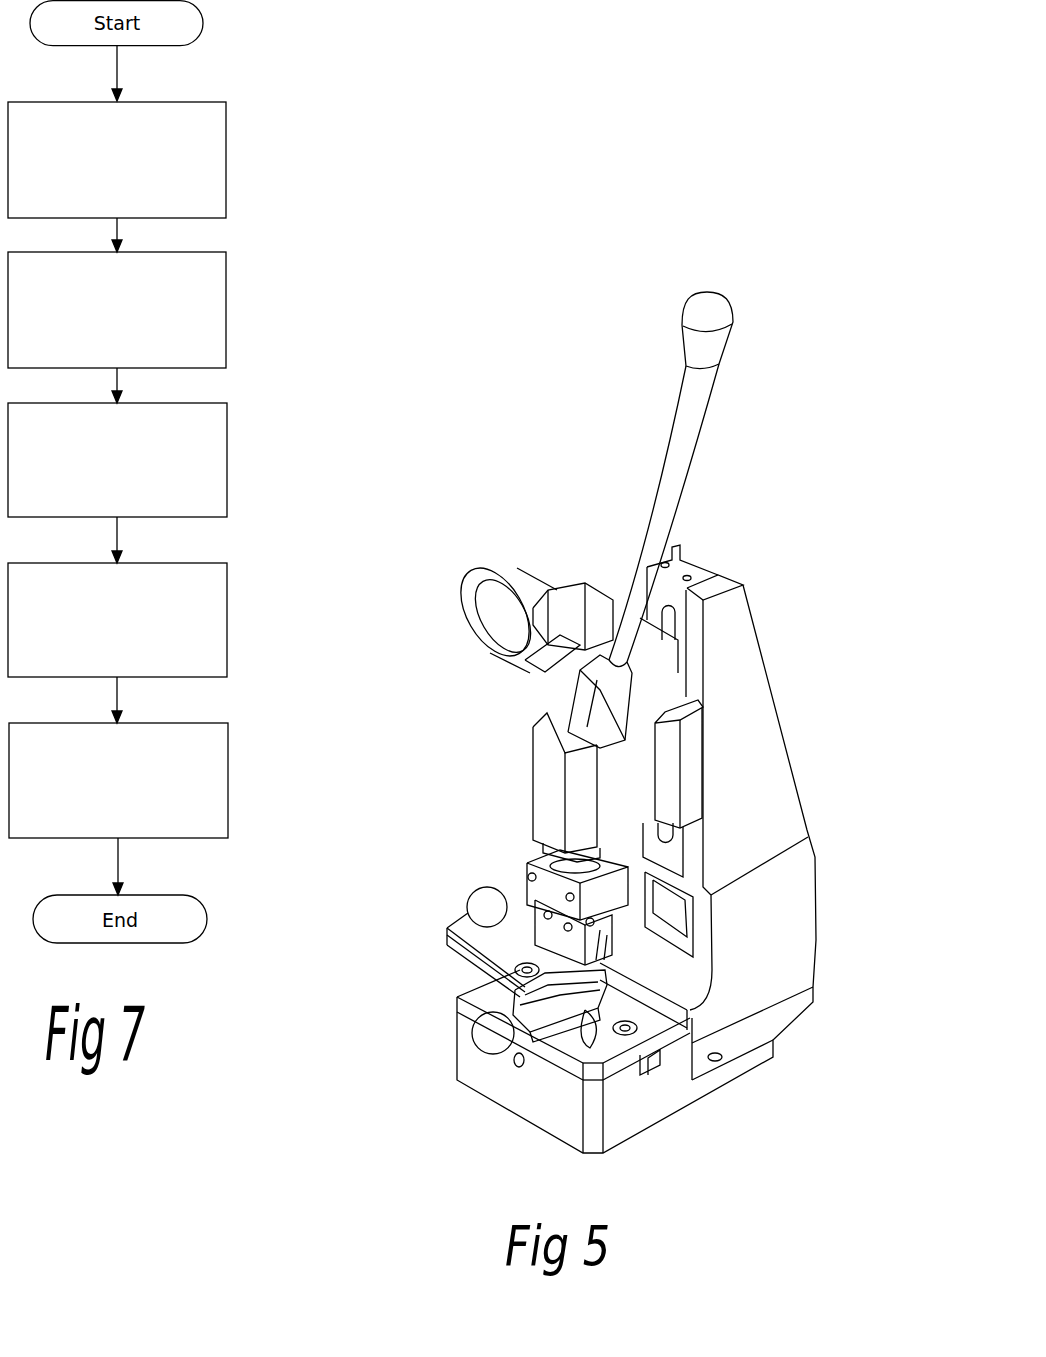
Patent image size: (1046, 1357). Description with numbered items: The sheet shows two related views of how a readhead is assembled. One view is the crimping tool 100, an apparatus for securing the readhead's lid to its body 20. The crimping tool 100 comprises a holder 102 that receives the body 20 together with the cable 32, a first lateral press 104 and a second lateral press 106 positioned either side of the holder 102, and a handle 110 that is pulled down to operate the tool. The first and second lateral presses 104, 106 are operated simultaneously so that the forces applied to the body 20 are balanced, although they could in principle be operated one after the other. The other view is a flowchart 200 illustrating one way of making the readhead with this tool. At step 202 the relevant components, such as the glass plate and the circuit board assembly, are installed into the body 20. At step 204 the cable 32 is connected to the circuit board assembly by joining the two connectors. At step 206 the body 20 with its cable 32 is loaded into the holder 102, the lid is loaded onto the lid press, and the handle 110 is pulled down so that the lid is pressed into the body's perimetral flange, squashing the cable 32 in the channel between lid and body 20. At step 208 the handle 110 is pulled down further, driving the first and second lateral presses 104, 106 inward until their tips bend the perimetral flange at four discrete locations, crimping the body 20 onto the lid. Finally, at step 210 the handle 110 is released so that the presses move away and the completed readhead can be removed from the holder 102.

In FIG. 7, the flowchart 200 is at (366, 35).
In FIG. 7, the step of installing components 202 is at (166, 160).
In FIG. 7, the step of connecting cable 204 is at (230, 311).
In FIG. 7, the step of pressing lid onto body 206 is at (229, 462).
In FIG. 7, the step of crimping body onto lid 208 is at (229, 623).
In FIG. 7, the step of releasing lid press 210 is at (231, 778).
In FIG. 5, the crimping tool 100 is at (869, 386).
In FIG. 5, the holder 102 is at (567, 1010).
In FIG. 5, the first lateral press 104 is at (530, 903).
In FIG. 5, the second lateral press 106 is at (697, 921).
In FIG. 5, the handle 110 is at (688, 346).
In FIG. 5, the body 20 is at (607, 978).
In FIG. 5, the cable 32 is at (528, 1000).